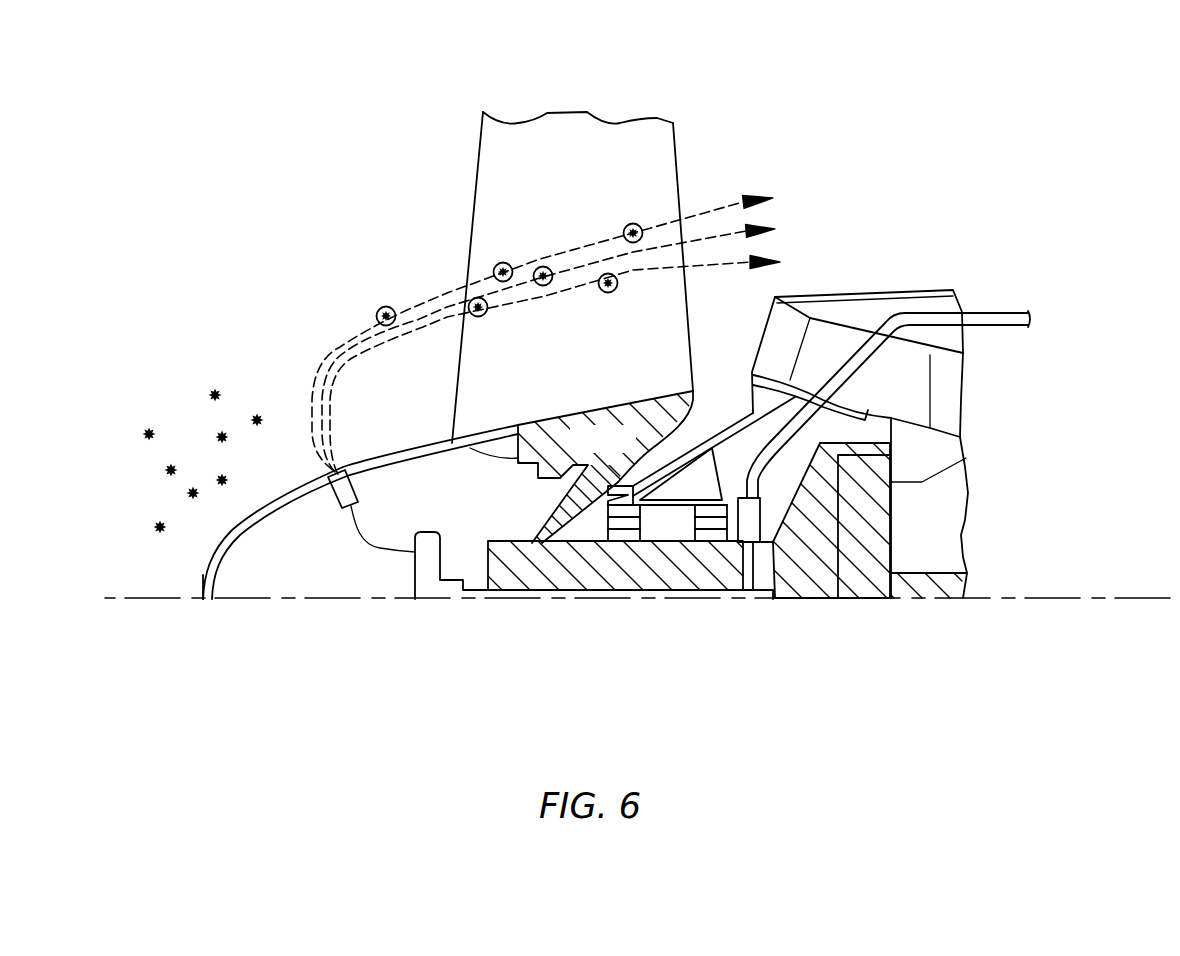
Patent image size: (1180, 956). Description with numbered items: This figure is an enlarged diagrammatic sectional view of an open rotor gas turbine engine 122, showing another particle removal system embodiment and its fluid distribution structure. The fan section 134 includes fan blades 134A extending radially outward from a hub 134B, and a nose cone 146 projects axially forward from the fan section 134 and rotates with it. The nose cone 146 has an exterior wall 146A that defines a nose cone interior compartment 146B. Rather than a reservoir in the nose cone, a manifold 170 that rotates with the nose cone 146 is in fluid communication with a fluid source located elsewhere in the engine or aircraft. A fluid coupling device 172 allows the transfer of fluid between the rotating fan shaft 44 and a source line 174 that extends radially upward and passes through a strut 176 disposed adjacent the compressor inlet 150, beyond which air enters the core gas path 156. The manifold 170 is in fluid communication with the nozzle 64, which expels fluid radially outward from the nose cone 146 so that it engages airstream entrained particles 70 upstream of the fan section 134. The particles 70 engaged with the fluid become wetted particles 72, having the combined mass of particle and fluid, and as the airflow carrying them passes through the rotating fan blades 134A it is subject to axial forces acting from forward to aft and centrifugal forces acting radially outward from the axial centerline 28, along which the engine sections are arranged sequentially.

The fan section 134 is at (695, 190).
The fan blades 134A is at (602, 170).
The hub 134B is at (632, 450).
The gas turbine engine 122 is at (915, 155).
The wetted particles 72 is at (505, 263).
The particles 70 is at (208, 390).
The nose cone 146 is at (397, 440).
The exterior wall 146A is at (203, 588).
The nose cone interior compartment 146B is at (325, 570).
The nozzle 64 is at (348, 491).
The manifold 170 is at (428, 572).
The fan shaft 44 is at (588, 572).
The fluid coupling device 172 is at (750, 525).
The source line 174 is at (1000, 312).
The compressor inlet 150 is at (775, 332).
The strut 176 is at (818, 345).
The core gas path 156 is at (945, 390).
The axial centerline 28 is at (1040, 597).